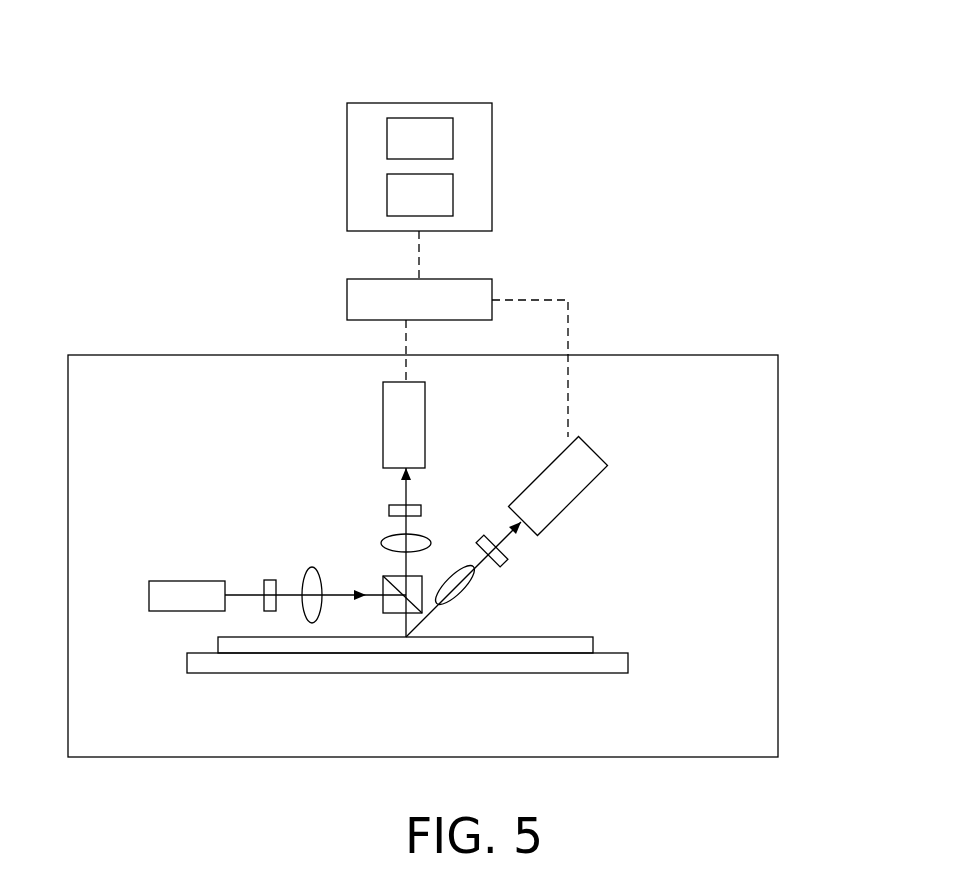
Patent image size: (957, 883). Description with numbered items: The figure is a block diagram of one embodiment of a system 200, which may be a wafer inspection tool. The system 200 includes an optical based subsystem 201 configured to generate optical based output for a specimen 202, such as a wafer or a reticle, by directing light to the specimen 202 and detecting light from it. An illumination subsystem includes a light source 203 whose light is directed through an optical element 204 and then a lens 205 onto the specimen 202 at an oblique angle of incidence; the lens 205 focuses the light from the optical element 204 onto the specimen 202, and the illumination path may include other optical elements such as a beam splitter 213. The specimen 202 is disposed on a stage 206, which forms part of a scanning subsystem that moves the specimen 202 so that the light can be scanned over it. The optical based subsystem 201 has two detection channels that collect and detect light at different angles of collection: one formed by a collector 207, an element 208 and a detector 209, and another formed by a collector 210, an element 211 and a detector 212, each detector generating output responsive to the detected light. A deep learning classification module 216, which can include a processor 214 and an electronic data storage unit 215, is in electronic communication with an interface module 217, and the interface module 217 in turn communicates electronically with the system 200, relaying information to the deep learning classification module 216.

The system 200 is at (203, 115).
The optical based subsystem 201 is at (778, 374).
The specimen 202 is at (218, 641).
The light source 203 is at (158, 581).
The optical element 204 is at (270, 580).
The lens 205 is at (311, 568).
The stage 206 is at (187, 672).
The collector 207 is at (382, 537).
The element 208 is at (389, 507).
The detector 209 is at (383, 427).
The collector 210 is at (475, 598).
The element 211 is at (502, 562).
The detector 212 is at (592, 488).
The beam splitter 213 is at (393, 585).
The processor 214 is at (440, 152).
The electronic data storage unit 215 is at (440, 209).
The deep learning classification module 216 is at (347, 167).
The interface module 217 is at (440, 311).